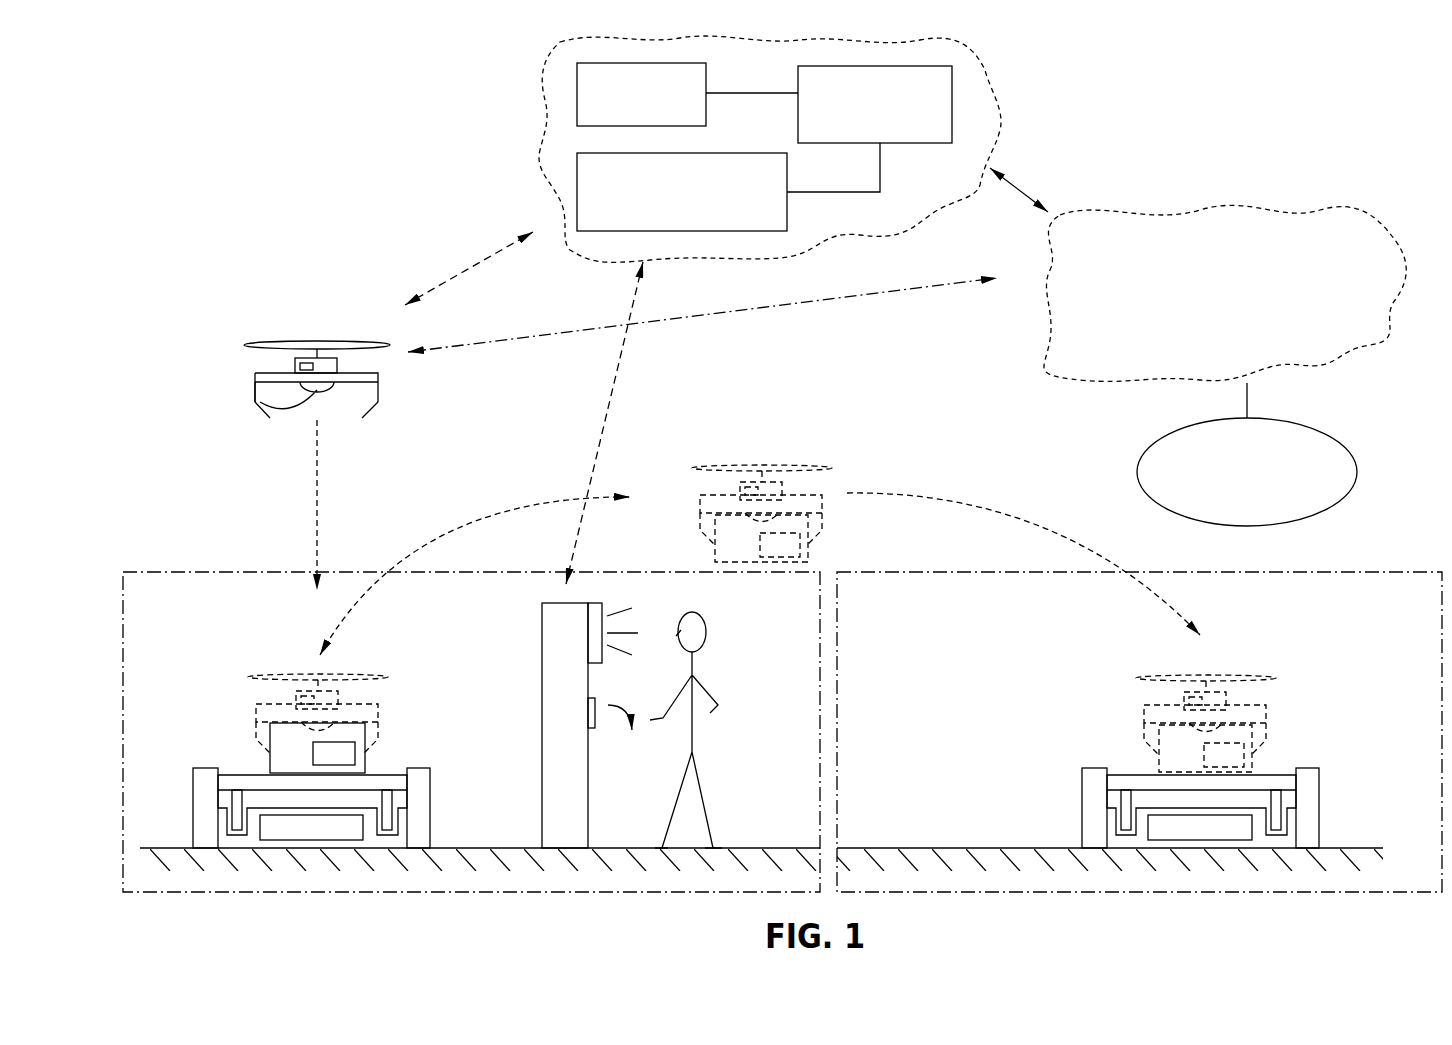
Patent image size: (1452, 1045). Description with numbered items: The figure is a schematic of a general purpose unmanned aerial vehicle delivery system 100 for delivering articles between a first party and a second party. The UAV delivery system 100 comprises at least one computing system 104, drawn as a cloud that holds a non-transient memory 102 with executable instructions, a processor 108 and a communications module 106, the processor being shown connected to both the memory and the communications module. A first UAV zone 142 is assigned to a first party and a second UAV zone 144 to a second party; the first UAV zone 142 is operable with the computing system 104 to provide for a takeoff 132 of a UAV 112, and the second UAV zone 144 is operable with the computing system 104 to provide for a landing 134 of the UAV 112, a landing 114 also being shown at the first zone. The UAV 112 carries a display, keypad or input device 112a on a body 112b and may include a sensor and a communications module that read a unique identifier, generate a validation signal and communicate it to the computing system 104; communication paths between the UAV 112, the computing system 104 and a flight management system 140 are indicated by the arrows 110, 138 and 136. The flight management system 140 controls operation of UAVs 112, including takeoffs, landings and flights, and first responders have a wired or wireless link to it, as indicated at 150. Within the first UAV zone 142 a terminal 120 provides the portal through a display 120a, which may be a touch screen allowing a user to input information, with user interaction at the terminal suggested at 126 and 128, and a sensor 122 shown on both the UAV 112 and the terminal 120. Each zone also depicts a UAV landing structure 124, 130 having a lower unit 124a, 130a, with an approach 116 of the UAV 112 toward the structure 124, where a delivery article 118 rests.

The UAV delivery system 100 is at (268, 160).
The non-transient memory 102 is at (577, 78).
The computing system 104 is at (548, 118).
The communications module 106 is at (577, 178).
The processor 108 is at (952, 80).
The communication link 110 is at (447, 280).
The UAV 112 is at (310, 336).
The input device 112a is at (303, 365).
The payload / body 112b is at (258, 395).
The landing 114 is at (315, 505).
The landing path 116 is at (310, 667).
The delivery article 118 is at (292, 738).
The terminal 120 is at (552, 628).
The display 120a is at (594, 638).
The sensor 122 is at (340, 752).
The docking station 124 is at (420, 778).
The battery 124a is at (340, 826).
The speaker output 126 is at (615, 603).
The user 128 is at (600, 697).
The docking station 130 is at (1310, 778).
The battery 130a is at (1230, 825).
The takeoff 132 is at (468, 517).
The landing 134 is at (1046, 520).
The communication link 136 is at (1027, 192).
The communication link 138 is at (826, 300).
The flight management system 140 is at (1102, 240).
The first UAV zone 142 is at (258, 570).
The second UAV zone 144 is at (935, 568).
The first responder link 150 is at (1337, 440).